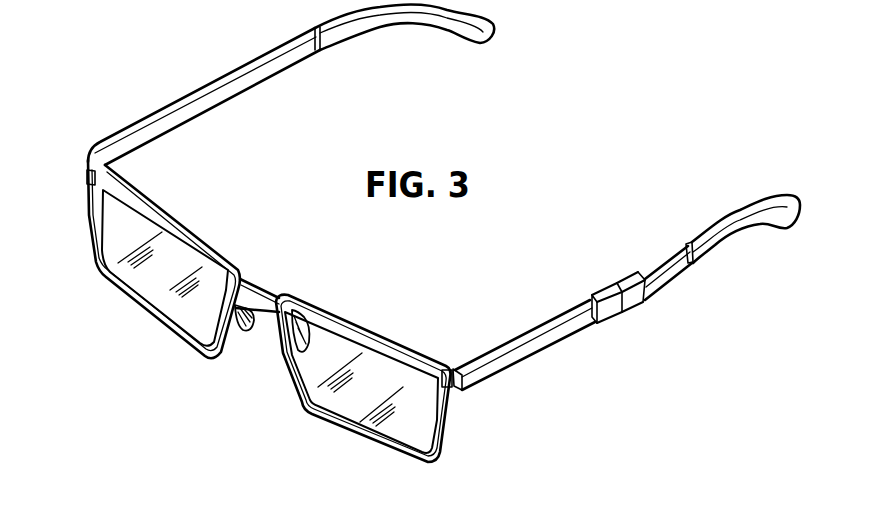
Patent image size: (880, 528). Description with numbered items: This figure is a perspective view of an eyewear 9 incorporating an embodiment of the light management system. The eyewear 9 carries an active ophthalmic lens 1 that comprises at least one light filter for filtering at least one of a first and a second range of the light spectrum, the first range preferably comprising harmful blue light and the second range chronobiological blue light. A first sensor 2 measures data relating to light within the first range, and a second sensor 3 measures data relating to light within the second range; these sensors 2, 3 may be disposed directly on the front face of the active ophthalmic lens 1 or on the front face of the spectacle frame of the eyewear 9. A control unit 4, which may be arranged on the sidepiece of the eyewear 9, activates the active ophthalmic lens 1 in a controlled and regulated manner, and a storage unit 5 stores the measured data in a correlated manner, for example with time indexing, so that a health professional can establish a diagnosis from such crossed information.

The active ophthalmic lens 1 is at (390, 423).
The first sensor 2 is at (453, 385).
The second sensor 3 is at (85, 170).
The control unit 4 is at (613, 318).
The storage unit 5 is at (637, 310).
The eyewear 9 is at (182, 73).